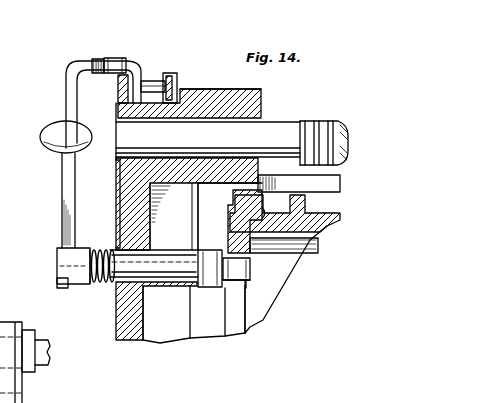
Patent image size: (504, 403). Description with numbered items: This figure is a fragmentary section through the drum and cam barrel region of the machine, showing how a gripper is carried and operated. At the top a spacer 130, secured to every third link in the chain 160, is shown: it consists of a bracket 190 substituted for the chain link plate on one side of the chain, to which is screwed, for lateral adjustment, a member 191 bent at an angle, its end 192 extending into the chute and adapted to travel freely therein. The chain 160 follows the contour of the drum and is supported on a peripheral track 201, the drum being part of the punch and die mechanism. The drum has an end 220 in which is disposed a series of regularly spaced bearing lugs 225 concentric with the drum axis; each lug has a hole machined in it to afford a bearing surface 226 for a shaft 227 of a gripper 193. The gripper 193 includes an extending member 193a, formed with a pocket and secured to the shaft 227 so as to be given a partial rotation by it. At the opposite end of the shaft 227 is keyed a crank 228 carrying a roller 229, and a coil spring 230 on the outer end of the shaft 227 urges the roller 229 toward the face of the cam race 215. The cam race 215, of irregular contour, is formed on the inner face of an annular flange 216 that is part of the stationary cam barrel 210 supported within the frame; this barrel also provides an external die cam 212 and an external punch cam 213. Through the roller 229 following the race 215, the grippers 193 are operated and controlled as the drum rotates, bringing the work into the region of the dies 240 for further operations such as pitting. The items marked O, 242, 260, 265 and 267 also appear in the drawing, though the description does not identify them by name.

The spacer 130 is at (72, 62).
The member bent at an angle 191 is at (97, 58).
The bracket 190 is at (141, 68).
The end of angled member 192 is at (66, 100).
The ring O is at (40, 137).
The gripper 193 is at (60, 168).
The extending member 193a is at (62, 192).
The chain 160 is at (163, 80).
The peripheral track 201 is at (178, 85).
The block 242 is at (263, 100).
The threads 267 is at (316, 122).
The shaft 265 is at (208, 139).
The threaded end 260 is at (300, 150).
The die 240 is at (130, 150).
The external punch cam 213 is at (240, 208).
The annular flange 216 is at (231, 232).
The external die cam 212 is at (320, 226).
The cam barrel 210 is at (318, 240).
The cam race 215 is at (250, 268).
The roller 229 is at (242, 284).
The shaft 227 is at (171, 268).
The bearing surface 226 is at (178, 290).
The crank 228 is at (210, 292).
The bearing lug 225 is at (154, 300).
The coil spring 230 is at (98, 287).
The end of drum 220 is at (122, 330).